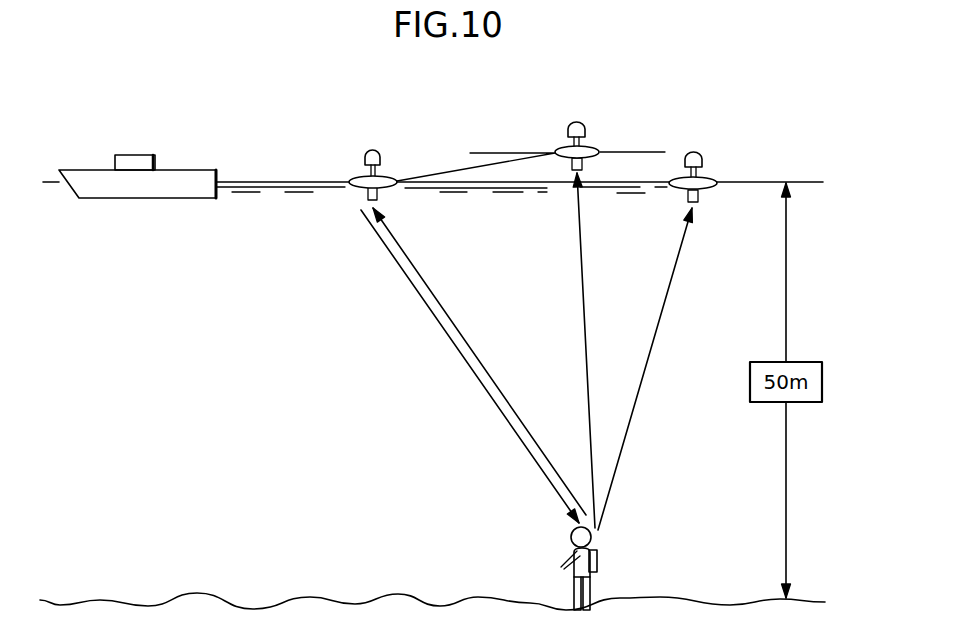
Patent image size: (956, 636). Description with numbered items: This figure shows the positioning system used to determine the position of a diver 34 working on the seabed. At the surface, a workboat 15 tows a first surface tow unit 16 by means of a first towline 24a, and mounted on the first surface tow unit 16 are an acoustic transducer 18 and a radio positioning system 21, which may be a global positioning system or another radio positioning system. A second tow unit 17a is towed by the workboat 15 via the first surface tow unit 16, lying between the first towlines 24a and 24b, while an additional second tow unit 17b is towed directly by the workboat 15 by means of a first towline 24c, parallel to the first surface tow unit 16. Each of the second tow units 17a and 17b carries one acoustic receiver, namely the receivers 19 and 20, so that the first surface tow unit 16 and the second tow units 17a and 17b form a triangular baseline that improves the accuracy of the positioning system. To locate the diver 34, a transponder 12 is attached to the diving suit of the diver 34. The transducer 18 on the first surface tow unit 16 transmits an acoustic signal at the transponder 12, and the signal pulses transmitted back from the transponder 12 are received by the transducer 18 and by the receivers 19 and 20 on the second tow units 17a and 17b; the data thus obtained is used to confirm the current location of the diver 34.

The workboat 15 is at (86, 170).
The first towline 24a is at (250, 178).
The first towline 24b is at (533, 187).
The first towline 24c is at (455, 170).
The first surface tow unit 16 is at (365, 176).
The radio positioning system 21 is at (380, 153).
The acoustic transducer 18 is at (365, 195).
The second tow unit 17b is at (604, 152).
The acoustic receiver 20 is at (583, 165).
The second tow unit 17a is at (719, 194).
The acoustic receiver 19 is at (700, 197).
The diver 34 is at (580, 570).
The transponder 12 is at (598, 560).